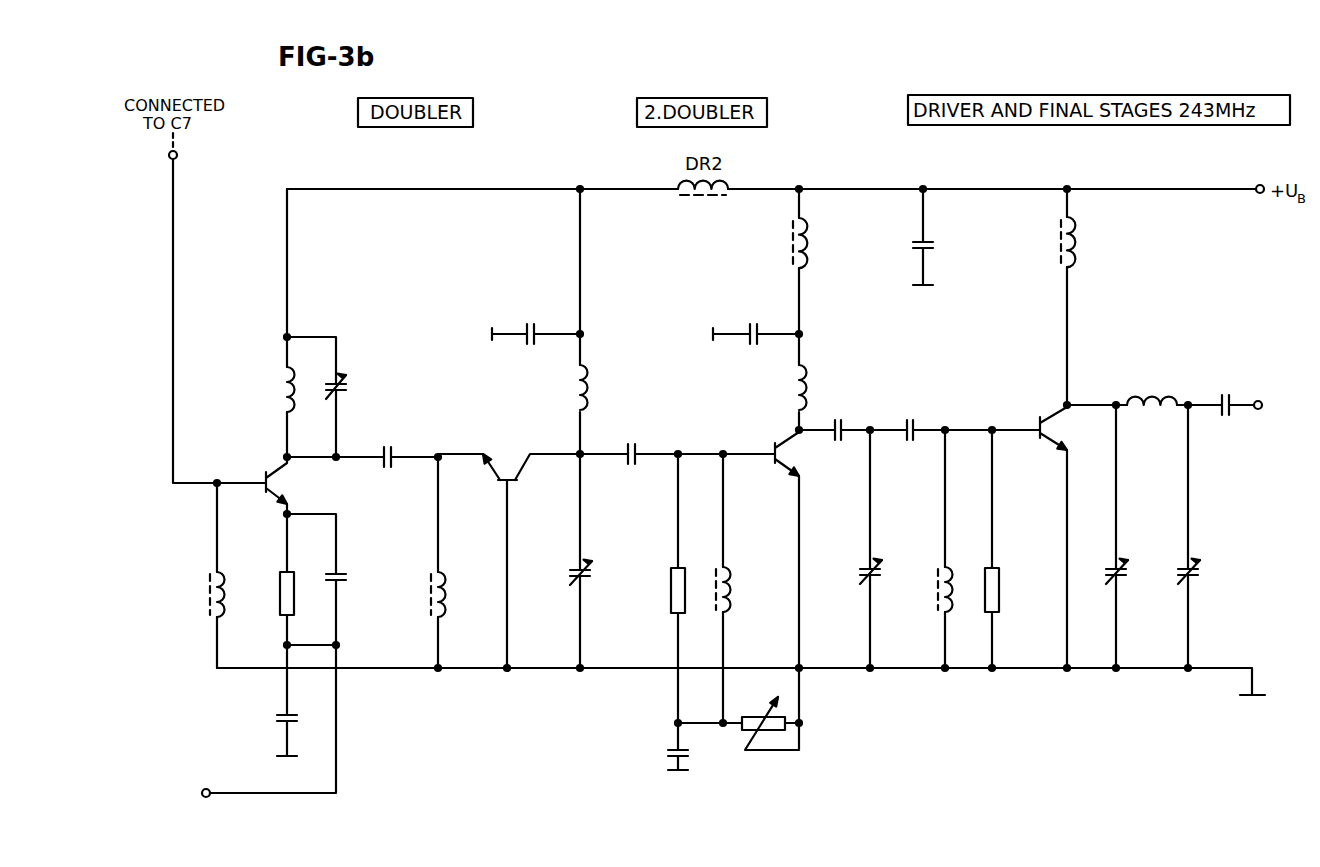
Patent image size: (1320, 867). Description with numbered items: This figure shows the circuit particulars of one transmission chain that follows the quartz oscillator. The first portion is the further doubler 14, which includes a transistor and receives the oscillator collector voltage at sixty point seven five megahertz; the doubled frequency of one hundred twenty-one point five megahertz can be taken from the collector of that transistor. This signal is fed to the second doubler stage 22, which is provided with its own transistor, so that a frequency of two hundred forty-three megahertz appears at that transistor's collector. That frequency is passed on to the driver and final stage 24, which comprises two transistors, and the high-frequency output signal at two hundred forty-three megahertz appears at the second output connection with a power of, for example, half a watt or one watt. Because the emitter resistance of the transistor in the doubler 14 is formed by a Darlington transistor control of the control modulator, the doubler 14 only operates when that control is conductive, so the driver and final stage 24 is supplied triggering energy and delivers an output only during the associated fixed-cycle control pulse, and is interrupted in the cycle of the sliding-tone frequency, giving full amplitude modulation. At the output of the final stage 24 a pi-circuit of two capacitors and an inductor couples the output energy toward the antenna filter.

The further doubler 14 is at (247, 263).
The second doubler stage 22 is at (535, 263).
The driver and final stage 24 is at (949, 348).